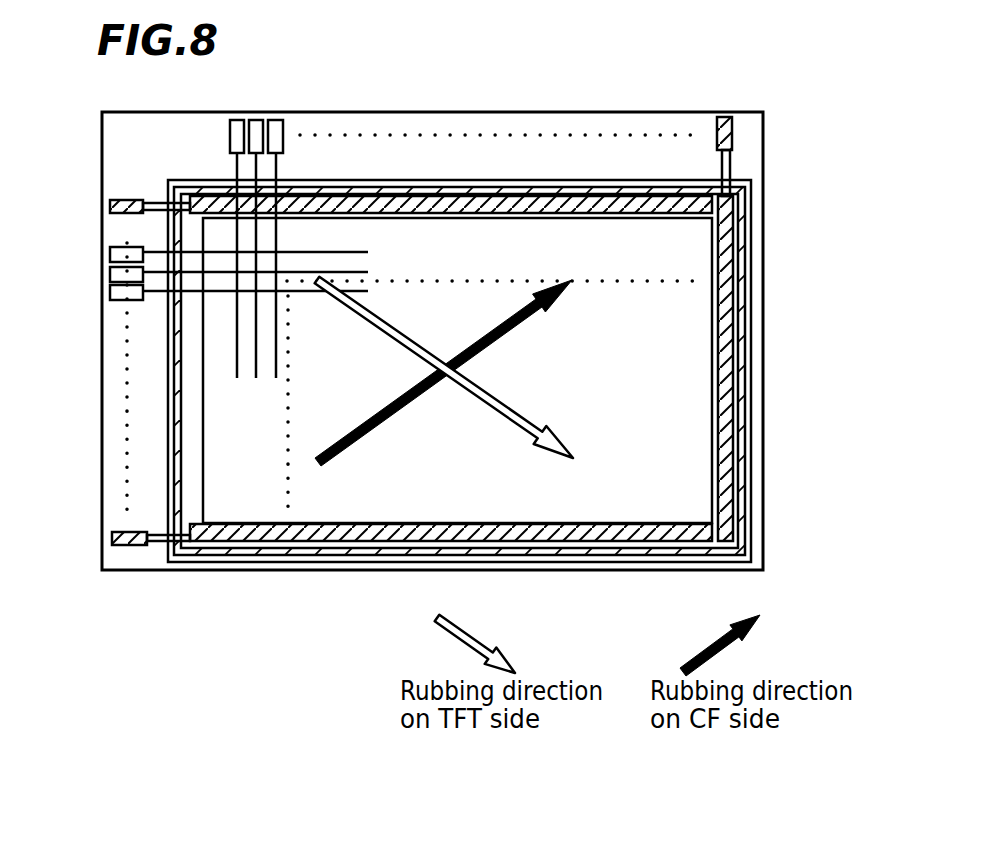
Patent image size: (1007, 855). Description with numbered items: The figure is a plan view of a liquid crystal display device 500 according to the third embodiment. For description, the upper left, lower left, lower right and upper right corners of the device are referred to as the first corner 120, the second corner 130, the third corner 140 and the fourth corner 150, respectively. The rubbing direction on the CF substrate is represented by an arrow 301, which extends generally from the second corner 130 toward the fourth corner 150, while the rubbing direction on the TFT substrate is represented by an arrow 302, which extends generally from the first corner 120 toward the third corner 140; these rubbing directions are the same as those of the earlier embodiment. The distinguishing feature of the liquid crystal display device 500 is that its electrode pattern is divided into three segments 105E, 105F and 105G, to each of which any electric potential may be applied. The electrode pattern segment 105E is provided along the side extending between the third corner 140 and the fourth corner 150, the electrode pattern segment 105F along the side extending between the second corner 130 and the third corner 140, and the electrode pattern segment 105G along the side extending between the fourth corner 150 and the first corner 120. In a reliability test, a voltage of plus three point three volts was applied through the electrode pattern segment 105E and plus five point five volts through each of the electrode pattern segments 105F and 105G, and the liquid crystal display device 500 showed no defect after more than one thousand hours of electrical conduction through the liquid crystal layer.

The liquid crystal display device 500 is at (607, 30).
The electrode pattern segment 105E is at (735, 127).
The electrode pattern segment 105G is at (110, 207).
The electrode pattern segment 105F is at (110, 538).
The first corner 120 is at (187, 208).
The second corner 130 is at (198, 532).
The third corner 140 is at (730, 528).
The fourth corner 150 is at (725, 206).
The arrow 301 is at (513, 328).
The arrow 302 is at (520, 415).